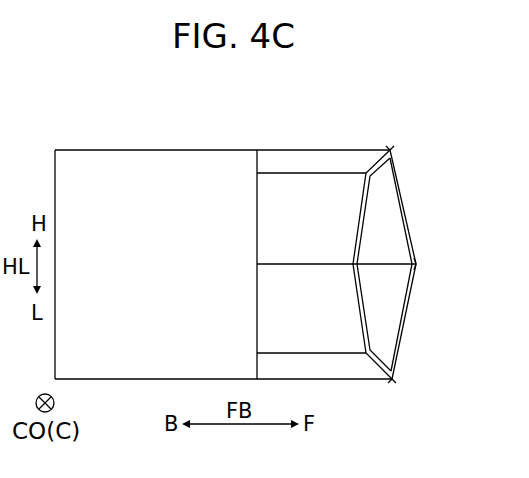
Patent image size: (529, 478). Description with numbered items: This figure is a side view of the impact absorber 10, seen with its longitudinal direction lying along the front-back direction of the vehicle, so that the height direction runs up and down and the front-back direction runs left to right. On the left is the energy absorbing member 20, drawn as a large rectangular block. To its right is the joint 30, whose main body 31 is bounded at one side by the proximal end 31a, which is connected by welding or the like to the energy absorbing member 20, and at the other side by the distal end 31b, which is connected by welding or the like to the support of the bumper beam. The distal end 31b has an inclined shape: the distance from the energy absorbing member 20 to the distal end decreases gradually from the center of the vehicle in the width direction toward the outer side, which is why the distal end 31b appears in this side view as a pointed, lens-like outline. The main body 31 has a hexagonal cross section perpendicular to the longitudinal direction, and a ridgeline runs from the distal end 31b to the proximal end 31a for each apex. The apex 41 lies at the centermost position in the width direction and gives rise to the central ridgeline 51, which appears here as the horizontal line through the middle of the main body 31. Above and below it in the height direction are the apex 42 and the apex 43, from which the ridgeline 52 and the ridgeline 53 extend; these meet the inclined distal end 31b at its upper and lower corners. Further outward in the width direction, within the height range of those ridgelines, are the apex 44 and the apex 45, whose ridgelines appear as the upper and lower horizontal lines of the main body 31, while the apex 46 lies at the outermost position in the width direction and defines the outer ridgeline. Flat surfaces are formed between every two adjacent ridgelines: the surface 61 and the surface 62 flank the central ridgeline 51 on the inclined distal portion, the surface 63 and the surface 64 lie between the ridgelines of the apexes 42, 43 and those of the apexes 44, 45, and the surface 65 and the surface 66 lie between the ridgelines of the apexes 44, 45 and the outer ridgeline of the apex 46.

The impact absorber 10 is at (48, 148).
The energy absorbing member 20 is at (104, 216).
The joint 30 is at (412, 105).
The proximal end 31a is at (257, 150).
The main body 31 is at (305, 150).
The distal end 31b is at (390, 150).
The apex 41 is at (418, 264).
The central ridgeline 51 is at (464, 269).
The apex 42 is at (394, 150).
The ridgeline 52 is at (439, 153).
The apex 43 is at (394, 379).
The ridgeline 53 is at (440, 383).
The apex 44 is at (257, 174).
The apex 45 is at (257, 354).
The apex 46 is at (257, 264).
The surface 61 is at (410, 217).
The surface 62 is at (410, 323).
The surface 63 is at (323, 170).
The surface 64 is at (309, 368).
The surface 65 is at (323, 223).
The surface 66 is at (323, 323).